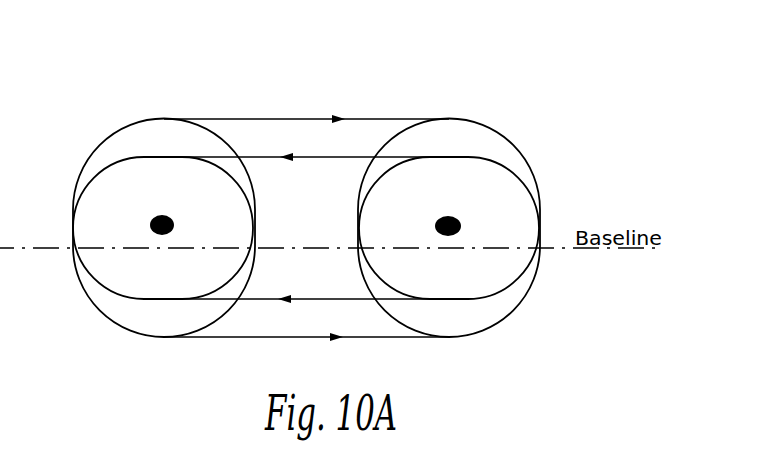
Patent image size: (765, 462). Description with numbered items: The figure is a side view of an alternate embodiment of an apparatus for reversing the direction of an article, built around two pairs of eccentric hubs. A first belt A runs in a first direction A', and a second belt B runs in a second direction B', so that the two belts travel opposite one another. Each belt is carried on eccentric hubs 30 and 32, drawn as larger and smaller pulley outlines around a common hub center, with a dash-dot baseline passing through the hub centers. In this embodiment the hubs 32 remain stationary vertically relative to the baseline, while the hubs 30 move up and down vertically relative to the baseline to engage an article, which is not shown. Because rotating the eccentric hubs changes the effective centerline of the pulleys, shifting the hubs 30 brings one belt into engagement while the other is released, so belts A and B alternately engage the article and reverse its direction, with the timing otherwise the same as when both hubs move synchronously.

The eccentric hub 30 is at (121, 127).
The eccentric hub 32 is at (102, 318).
The first belt A is at (306, 89).
The first direction A' is at (306, 108).
The second belt B is at (306, 334).
The second direction B' is at (306, 352).